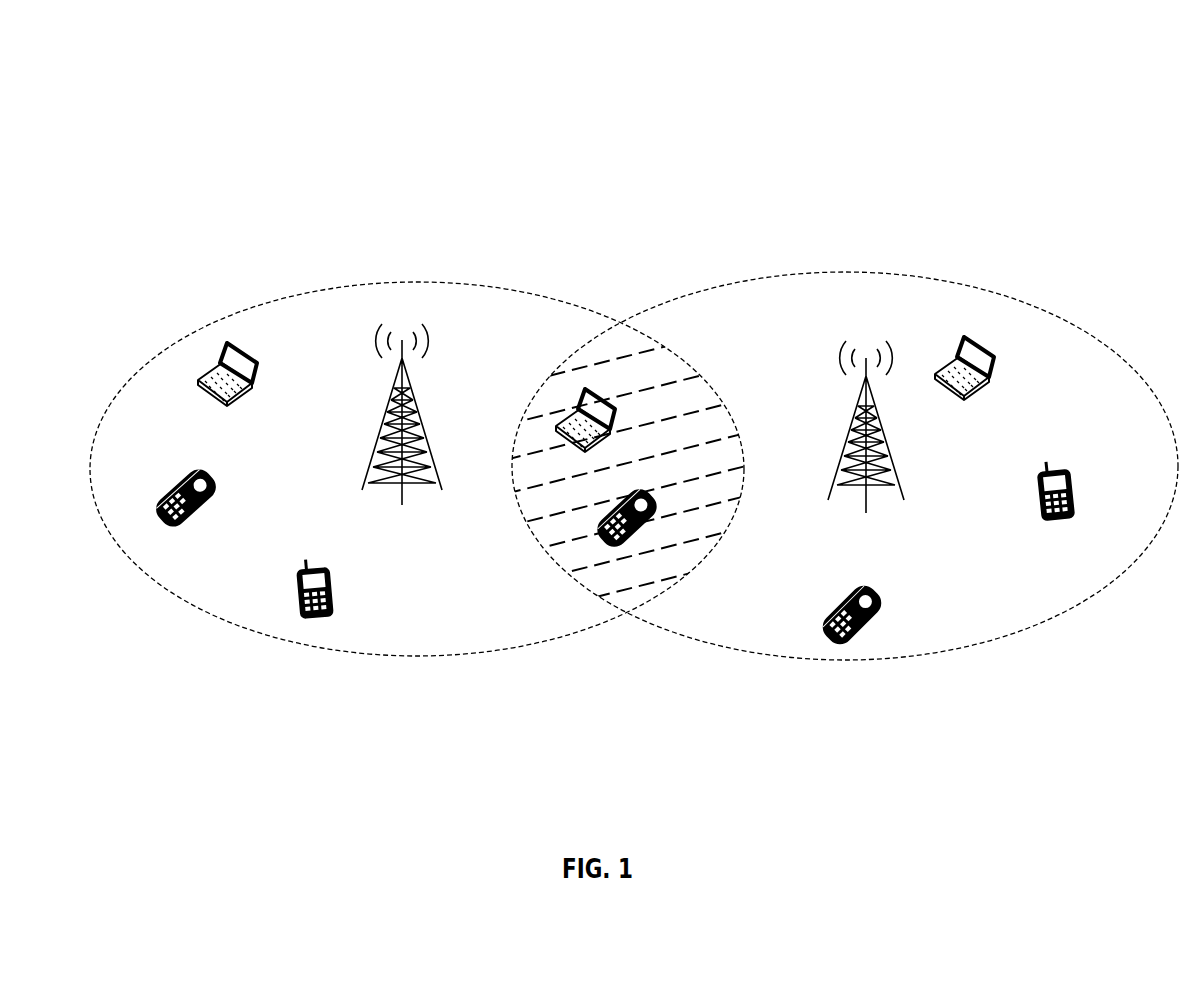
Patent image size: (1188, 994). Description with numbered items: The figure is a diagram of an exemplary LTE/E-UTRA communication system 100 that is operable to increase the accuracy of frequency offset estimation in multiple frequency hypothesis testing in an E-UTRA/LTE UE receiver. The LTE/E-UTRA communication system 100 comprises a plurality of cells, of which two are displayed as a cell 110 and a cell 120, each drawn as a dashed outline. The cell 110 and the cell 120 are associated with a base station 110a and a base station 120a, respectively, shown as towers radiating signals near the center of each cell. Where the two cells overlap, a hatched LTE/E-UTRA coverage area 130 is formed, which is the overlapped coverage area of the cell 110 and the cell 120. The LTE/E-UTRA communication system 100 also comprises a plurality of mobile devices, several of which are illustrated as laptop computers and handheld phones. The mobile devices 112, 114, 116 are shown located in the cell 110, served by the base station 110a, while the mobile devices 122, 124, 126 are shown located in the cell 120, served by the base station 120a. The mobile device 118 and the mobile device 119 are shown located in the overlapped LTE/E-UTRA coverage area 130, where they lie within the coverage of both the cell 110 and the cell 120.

The LTE/E-UTRA communication system 100 is at (343, 88).
The cell 110 is at (520, 293).
The base station 110a is at (436, 341).
The mobile device 112 is at (260, 366).
The mobile device 114 is at (216, 490).
The mobile device 116 is at (334, 597).
The mobile device 118 is at (647, 524).
The mobile device 119 is at (618, 435).
The cell 120 is at (915, 281).
The base station 120a is at (900, 364).
The mobile device 122 is at (997, 358).
The mobile device 124 is at (1070, 502).
The mobile device 126 is at (880, 608).
The LTE/E-UTRA coverage area 130 is at (617, 323).